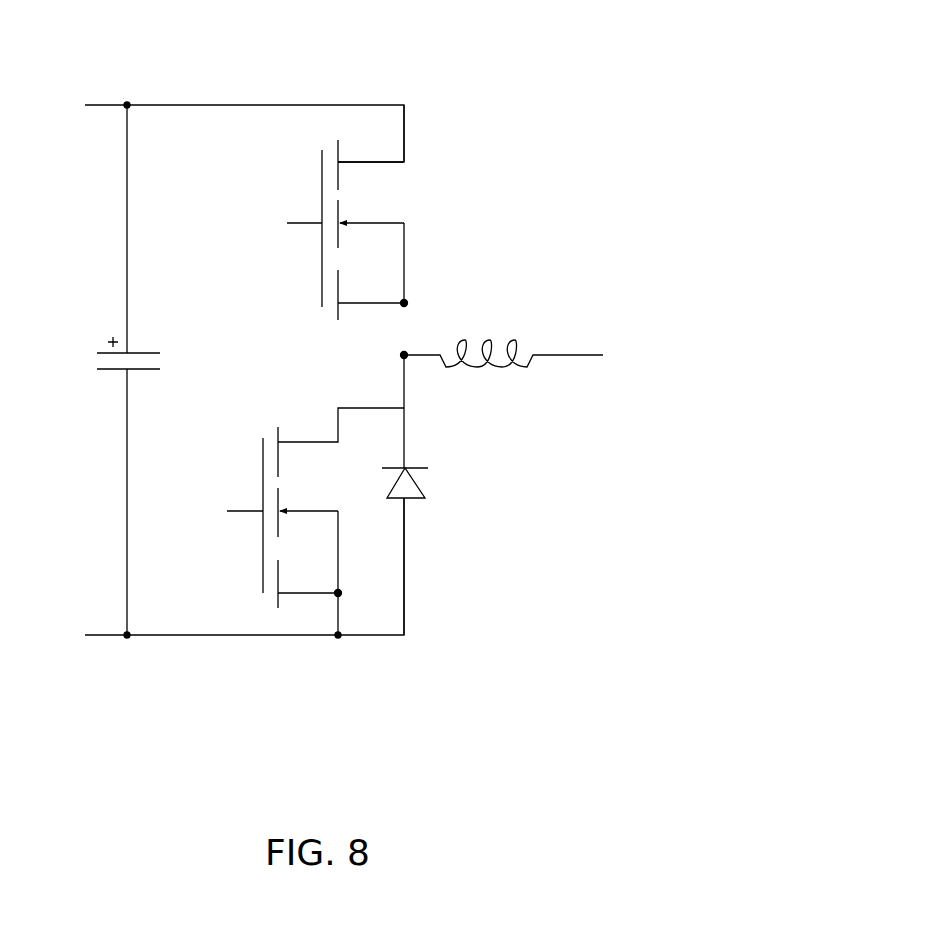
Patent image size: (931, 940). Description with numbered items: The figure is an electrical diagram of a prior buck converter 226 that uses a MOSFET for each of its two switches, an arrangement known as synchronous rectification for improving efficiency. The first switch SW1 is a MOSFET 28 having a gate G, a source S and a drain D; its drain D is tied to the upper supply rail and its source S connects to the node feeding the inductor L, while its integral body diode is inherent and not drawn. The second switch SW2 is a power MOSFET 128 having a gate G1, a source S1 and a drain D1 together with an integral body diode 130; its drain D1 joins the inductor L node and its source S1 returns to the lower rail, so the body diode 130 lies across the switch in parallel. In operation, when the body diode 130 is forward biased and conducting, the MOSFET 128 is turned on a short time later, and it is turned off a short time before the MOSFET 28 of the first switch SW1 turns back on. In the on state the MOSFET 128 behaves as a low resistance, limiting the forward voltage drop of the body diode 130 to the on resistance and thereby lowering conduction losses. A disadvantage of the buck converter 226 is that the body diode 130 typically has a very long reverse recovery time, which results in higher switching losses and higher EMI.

The buck converter 226 is at (64, 76).
The MOSFET 28 is at (420, 152).
The first switch SW1 is at (440, 203).
The gate G is at (290, 219).
The drain D is at (400, 152).
The source S is at (400, 313).
The inductor L is at (506, 330).
The second switch SW2 is at (370, 598).
The gate G1 is at (237, 506).
The drain D1 is at (324, 424).
The source S1 is at (320, 623).
The body diode 130 is at (422, 484).
The power MOSFET 128 is at (412, 558).